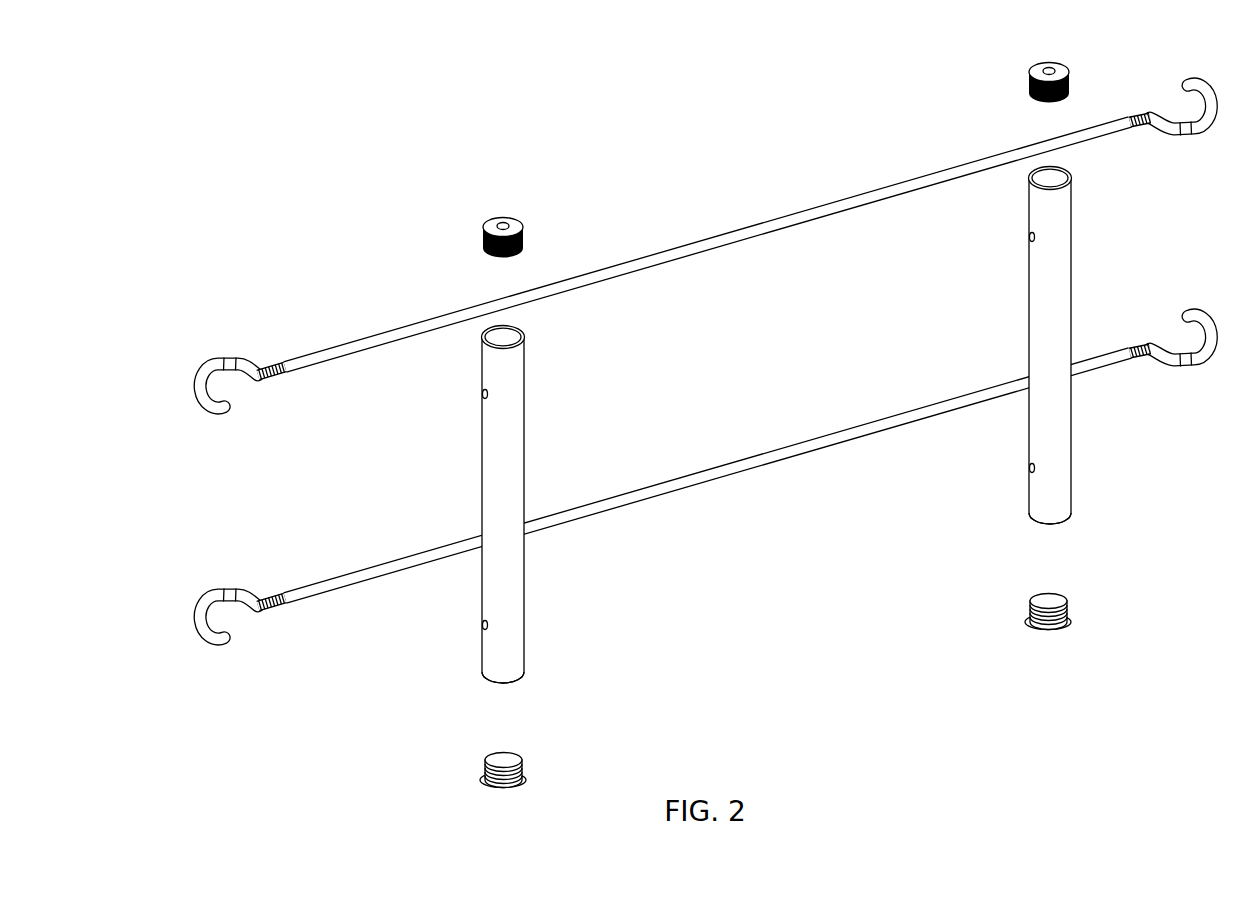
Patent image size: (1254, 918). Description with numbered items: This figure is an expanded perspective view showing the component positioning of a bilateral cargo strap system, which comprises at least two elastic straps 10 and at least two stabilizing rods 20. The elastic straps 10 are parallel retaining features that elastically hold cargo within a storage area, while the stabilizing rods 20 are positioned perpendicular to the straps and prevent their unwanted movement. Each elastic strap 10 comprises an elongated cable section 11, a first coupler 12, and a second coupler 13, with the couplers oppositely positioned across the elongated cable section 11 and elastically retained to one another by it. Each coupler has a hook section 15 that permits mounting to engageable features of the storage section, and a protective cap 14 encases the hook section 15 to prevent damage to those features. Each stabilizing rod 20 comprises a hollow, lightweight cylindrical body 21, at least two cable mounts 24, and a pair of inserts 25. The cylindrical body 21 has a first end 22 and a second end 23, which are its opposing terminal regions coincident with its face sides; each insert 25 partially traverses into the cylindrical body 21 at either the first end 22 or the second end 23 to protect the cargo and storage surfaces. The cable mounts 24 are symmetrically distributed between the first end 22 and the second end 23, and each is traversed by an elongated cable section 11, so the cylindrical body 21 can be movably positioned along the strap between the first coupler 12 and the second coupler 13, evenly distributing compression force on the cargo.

The elastic strap 10 is at (699, 362).
The elongated cable section 11 is at (589, 273).
The first coupler 12 is at (226, 348).
The second coupler 13 is at (1190, 146).
The protective cap 14 is at (200, 410).
The hook section 15 is at (250, 405).
The stabilizing rod 20 is at (821, 421).
The cylindrical body 21 is at (514, 503).
The first end 22 is at (535, 351).
The second end 23 is at (533, 658).
The cable mount 24 is at (483, 396).
The insert 25 is at (483, 233).